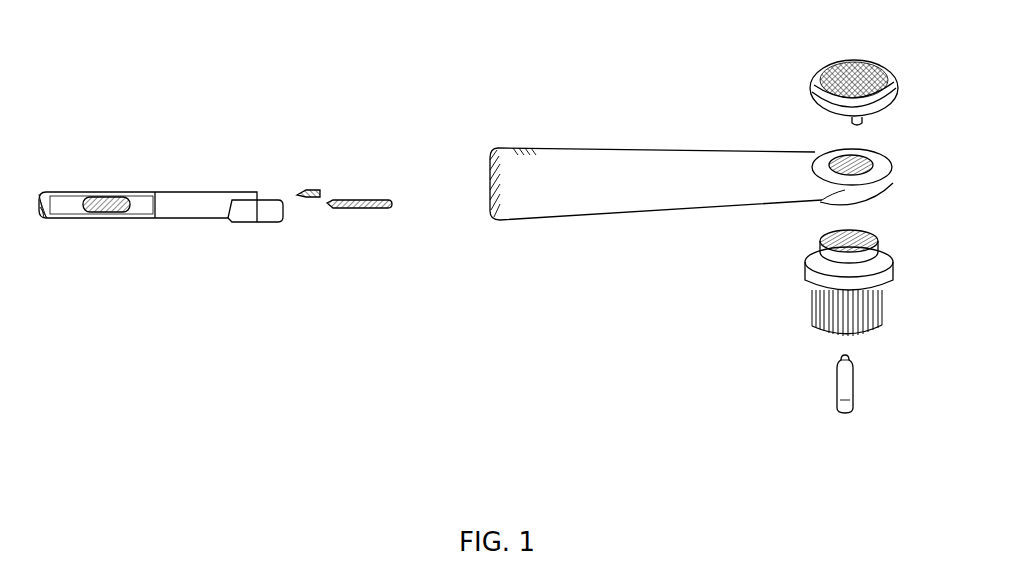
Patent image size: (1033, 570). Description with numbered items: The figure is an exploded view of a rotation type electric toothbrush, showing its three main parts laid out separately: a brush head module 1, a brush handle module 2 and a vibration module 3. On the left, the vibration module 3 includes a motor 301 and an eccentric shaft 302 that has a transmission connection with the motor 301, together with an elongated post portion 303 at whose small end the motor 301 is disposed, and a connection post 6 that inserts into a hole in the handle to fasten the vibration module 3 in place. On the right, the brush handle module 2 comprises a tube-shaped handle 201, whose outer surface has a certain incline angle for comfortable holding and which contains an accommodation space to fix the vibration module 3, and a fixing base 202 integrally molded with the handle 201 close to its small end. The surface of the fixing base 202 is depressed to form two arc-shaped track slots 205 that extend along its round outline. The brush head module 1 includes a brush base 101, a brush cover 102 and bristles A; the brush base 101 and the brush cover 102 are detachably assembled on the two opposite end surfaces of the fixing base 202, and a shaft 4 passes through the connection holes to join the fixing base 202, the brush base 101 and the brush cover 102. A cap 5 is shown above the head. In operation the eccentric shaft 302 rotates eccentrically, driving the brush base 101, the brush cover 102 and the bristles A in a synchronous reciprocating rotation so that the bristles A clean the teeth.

The brush head module 1 is at (907, 198).
The brush base 101 is at (885, 250).
The brush cover 102 is at (864, 121).
The brush handle module 2 is at (750, 87).
The handle 201 is at (638, 152).
The fixing base 202 is at (812, 153).
The arc-shaped track slots 205 is at (822, 200).
The vibration module 3 is at (350, 135).
The motor 301 is at (265, 200).
The eccentric shaft 302 is at (365, 203).
The post portion 303 is at (208, 203).
The shaft 4 is at (836, 388).
The cap 5 is at (842, 64).
The connection post 6 is at (310, 190).
The bristles A is at (870, 305).